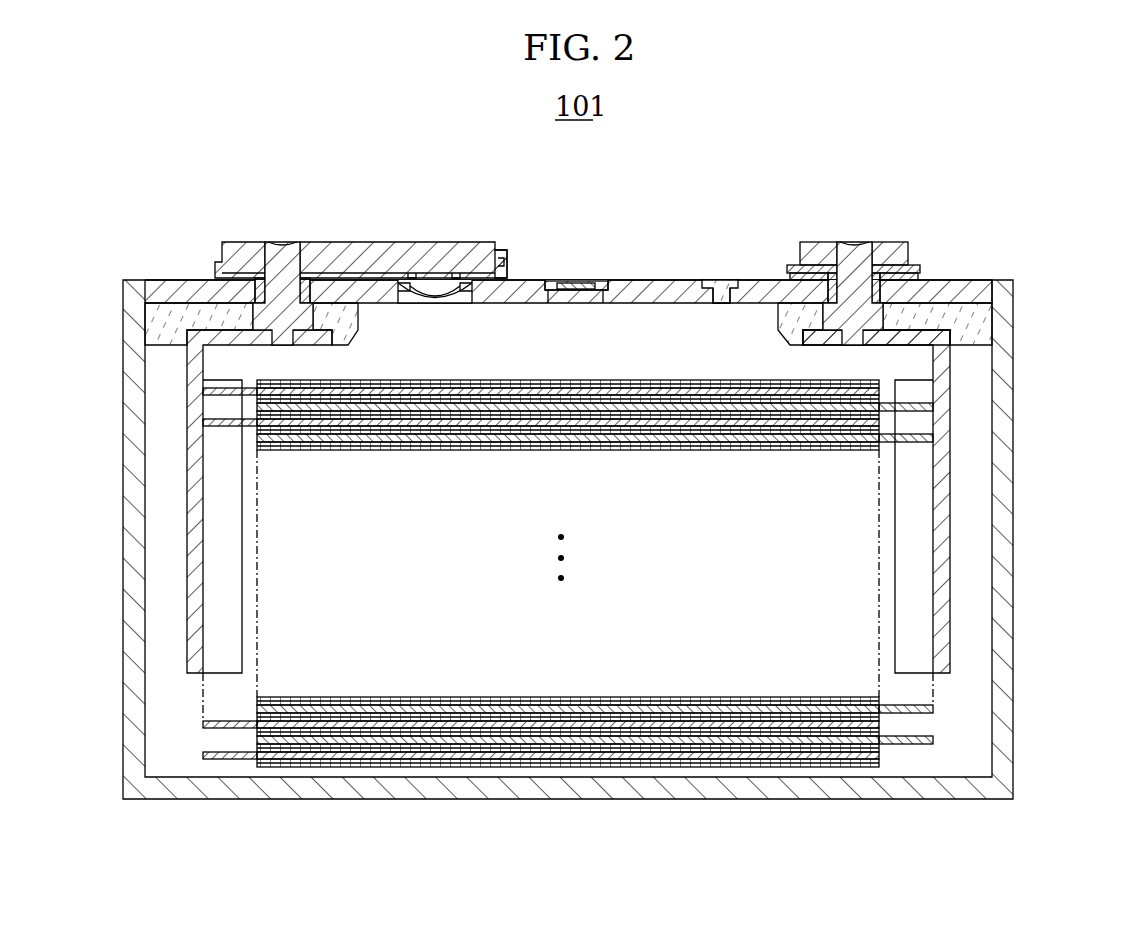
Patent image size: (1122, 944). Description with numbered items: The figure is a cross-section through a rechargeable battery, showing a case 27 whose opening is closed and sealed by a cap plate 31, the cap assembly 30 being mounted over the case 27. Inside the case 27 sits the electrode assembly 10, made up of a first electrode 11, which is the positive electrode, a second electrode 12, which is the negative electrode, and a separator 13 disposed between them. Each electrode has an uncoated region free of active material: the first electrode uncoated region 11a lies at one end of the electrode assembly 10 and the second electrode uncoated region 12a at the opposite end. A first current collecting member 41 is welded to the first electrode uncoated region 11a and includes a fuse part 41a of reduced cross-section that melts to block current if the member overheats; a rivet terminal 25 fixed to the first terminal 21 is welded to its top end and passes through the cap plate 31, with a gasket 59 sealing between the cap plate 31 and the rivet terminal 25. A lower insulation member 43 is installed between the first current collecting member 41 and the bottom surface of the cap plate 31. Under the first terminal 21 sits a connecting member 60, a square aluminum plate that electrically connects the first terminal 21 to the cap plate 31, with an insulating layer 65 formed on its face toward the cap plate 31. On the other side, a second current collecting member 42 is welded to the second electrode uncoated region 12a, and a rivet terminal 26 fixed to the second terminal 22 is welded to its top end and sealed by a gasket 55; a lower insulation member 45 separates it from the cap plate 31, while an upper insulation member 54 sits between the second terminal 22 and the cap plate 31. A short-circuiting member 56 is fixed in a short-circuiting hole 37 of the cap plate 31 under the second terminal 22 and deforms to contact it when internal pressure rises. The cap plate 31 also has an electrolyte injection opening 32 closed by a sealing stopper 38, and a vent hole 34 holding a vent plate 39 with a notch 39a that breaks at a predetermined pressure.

The electrode assembly 10 is at (571, 618).
The first electrode 11 is at (777, 741).
The first electrode uncoated region 11a is at (914, 745).
The second electrode 12 is at (357, 758).
The second electrode uncoated region 12a is at (218, 758).
The separator 13 is at (573, 732).
The first terminal 21 is at (892, 250).
The second terminal 22 is at (242, 260).
The rivet terminal 25 is at (854, 256).
The rivet terminal 26 is at (284, 256).
The case 27 is at (1000, 580).
The cap plate 30 is at (534, 270).
The cap plate 31 is at (973, 293).
The electrolyte injection opening 32 is at (717, 303).
The vent hole 34 is at (572, 303).
The short-circuiting hole 37 is at (407, 290).
The sealing stopper 38 is at (717, 283).
The vent plate 39 is at (600, 283).
The notch 39a is at (572, 282).
The first current collecting member 41 is at (945, 450).
The fuse part 41a is at (918, 350).
The second current collecting member 42 is at (197, 400).
The lower insulation member 43 is at (972, 325).
The lower insulation member 45 is at (163, 325).
The upper insulation member 54 is at (505, 260).
The gasket 55 is at (253, 292).
The short-circuiting member 56 is at (445, 290).
The gasket 59 is at (832, 292).
The connecting member 60 is at (918, 268).
The insulating layer 65 is at (790, 267).